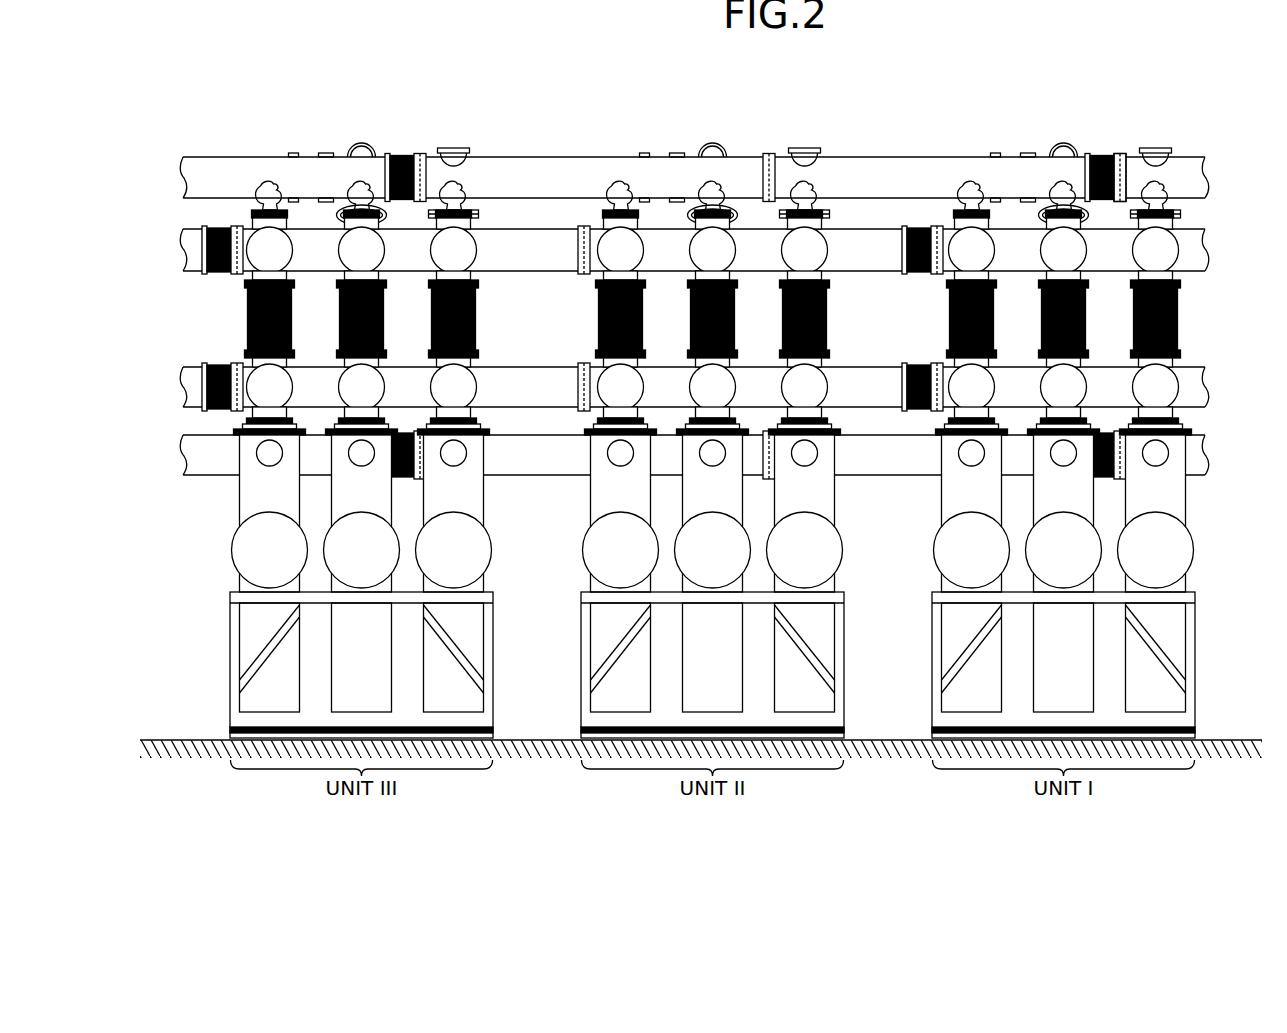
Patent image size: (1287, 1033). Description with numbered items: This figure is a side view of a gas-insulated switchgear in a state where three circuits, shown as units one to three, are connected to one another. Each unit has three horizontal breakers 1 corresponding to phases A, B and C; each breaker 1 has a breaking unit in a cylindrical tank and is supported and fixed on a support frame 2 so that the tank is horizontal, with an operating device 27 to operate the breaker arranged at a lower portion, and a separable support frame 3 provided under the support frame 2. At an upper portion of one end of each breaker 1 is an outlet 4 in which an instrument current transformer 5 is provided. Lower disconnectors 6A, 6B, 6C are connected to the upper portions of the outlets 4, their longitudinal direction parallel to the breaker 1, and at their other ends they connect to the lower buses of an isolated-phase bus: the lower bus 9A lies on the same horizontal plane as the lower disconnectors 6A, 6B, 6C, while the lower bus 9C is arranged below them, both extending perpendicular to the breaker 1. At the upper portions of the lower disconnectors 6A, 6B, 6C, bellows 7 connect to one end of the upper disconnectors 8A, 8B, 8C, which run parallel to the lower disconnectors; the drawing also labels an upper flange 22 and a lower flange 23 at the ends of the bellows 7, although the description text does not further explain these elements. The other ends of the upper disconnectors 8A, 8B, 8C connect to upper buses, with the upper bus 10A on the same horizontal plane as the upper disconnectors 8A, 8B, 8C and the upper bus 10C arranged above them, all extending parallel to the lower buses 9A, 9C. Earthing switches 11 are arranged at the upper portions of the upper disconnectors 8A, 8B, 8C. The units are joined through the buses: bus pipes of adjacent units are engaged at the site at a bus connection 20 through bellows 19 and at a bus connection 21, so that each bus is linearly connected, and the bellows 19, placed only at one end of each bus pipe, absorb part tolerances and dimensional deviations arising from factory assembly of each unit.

The breaker 1 is at (1178, 540).
The support frame 2 is at (1195, 650).
The support frame 3 is at (1195, 731).
The outlet 4 is at (1170, 505).
The instrument current transformer 5 is at (1165, 485).
The lower disconnector 6A is at (976, 388).
The lower disconnector 6B is at (1068, 388).
The lower disconnector 6C is at (1170, 387).
The bellows 7 is at (1180, 318).
The upper disconnector 8A is at (977, 253).
The upper disconnector 8B is at (1070, 253).
The upper disconnector 8C is at (1170, 250).
The lower bus 9A is at (532, 378).
The lower bus 9C is at (528, 468).
The upper bus 10A is at (510, 262).
The upper bus 10C is at (303, 165).
The earthing switch 11 is at (1160, 185).
The bellows 19 is at (219, 229).
The bus connection 20 is at (238, 228).
The bus connection 21 is at (585, 225).
The upper flange 22 is at (1182, 284).
The lower flange 23 is at (1182, 354).
The operating device 27 is at (1160, 690).